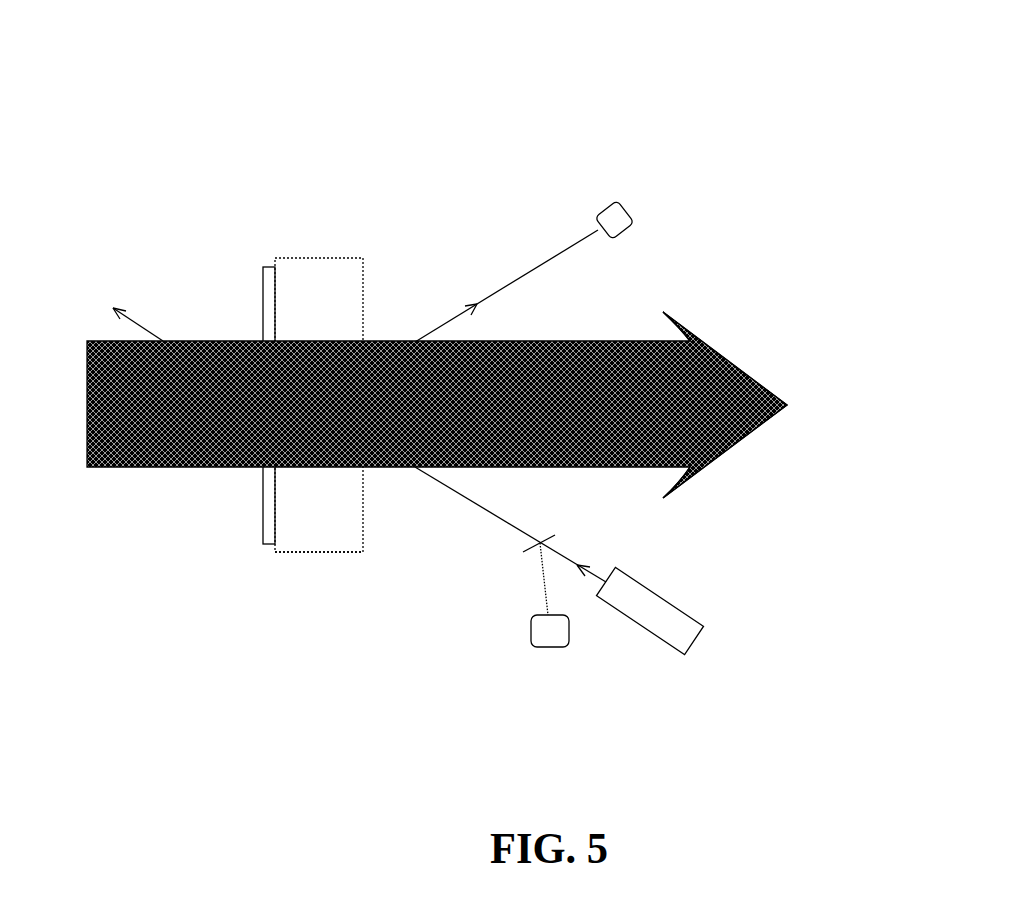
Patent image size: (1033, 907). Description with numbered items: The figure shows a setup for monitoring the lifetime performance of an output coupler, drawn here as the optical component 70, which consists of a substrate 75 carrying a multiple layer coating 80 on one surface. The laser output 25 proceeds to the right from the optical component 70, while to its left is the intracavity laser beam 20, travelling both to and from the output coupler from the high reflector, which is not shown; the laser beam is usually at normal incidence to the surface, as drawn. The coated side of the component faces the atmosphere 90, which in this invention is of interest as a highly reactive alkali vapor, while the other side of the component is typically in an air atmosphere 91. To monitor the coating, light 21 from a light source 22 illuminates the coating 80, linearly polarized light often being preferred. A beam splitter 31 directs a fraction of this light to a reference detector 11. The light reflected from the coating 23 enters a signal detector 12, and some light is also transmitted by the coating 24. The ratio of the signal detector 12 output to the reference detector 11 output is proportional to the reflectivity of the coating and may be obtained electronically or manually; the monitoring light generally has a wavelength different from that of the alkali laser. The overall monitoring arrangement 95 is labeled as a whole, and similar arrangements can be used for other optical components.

The optical measurement system 95 is at (463, 123).
The intracavity laser beam 20 is at (162, 472).
The laser output 25 is at (710, 470).
The transmitted light 24 is at (150, 328).
The light reflected from the coating 23 is at (507, 280).
The light 21 is at (465, 503).
The light source 22 is at (690, 662).
The signal detector 12 is at (633, 203).
The reference detector 11 is at (557, 652).
The beam splitter 31 is at (522, 558).
The optical component 70 is at (320, 247).
The multiple layer coating 80 is at (267, 557).
The substrate 75 is at (325, 558).
The atmosphere 90 is at (202, 522).
The air atmosphere 91 is at (427, 273).